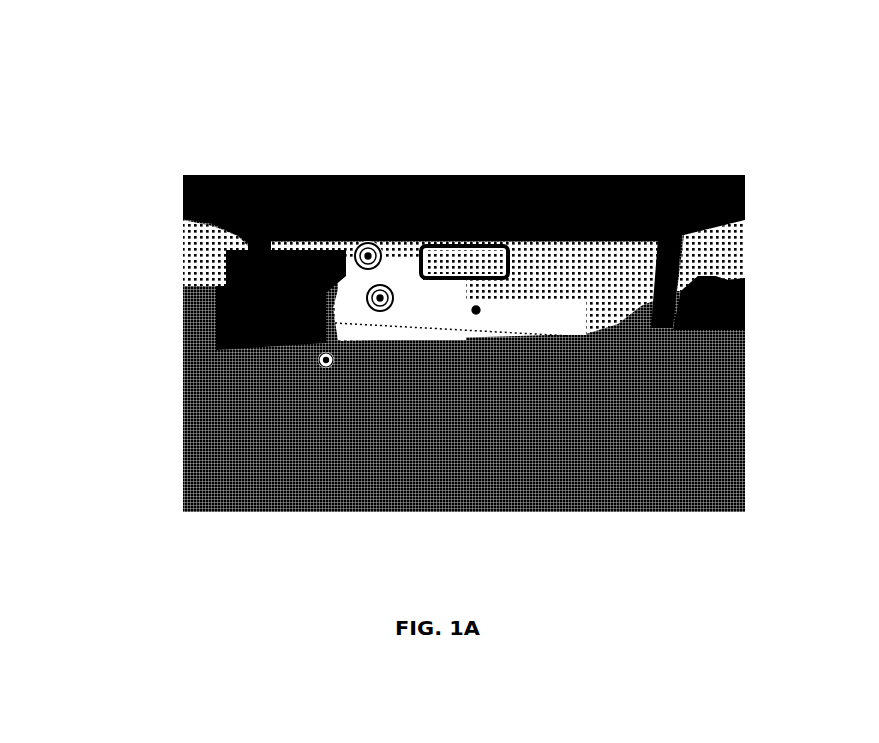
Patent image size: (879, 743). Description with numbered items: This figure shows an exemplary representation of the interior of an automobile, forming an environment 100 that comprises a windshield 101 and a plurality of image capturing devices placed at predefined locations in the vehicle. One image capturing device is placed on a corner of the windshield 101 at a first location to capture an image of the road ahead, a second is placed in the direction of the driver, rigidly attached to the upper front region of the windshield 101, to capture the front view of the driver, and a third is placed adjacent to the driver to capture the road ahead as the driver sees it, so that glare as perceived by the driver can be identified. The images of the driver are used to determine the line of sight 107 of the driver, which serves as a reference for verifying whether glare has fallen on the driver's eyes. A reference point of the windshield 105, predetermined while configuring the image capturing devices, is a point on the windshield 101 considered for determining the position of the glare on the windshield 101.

The environment 100 is at (236, 55).
The windshield 101 is at (755, 290).
The reference point of the windshield 105 is at (468, 298).
The line of sight of the driver 107 is at (545, 574).